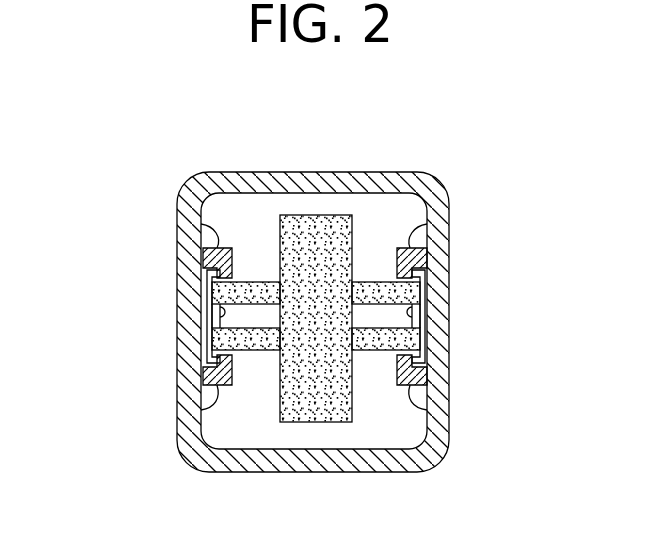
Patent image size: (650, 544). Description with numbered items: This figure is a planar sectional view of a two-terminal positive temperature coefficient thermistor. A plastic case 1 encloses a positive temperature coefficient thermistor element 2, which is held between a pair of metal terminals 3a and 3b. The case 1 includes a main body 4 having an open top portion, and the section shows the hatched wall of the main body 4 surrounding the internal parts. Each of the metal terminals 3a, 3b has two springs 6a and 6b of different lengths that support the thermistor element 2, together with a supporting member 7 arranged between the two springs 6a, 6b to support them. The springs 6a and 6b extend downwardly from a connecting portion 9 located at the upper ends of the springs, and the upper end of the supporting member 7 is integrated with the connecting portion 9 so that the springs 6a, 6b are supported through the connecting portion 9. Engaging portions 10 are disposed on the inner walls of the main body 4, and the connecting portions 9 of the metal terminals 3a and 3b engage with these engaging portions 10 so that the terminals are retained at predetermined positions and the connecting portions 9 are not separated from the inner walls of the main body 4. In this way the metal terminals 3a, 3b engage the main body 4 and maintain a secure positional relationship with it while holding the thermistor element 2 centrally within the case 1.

The plastic case 1 is at (481, 269).
The positive temperature coefficient thermistor element 2 is at (326, 215).
The metal terminal 3a is at (203, 279).
The metal terminal 3b is at (429, 348).
The main body 4 is at (449, 192).
The spring 6a is at (382, 282).
The spring 6b is at (248, 282).
The supporting member 7 is at (215, 295).
The connecting portion 9 is at (204, 343).
The engaging portion 10 is at (201, 225).